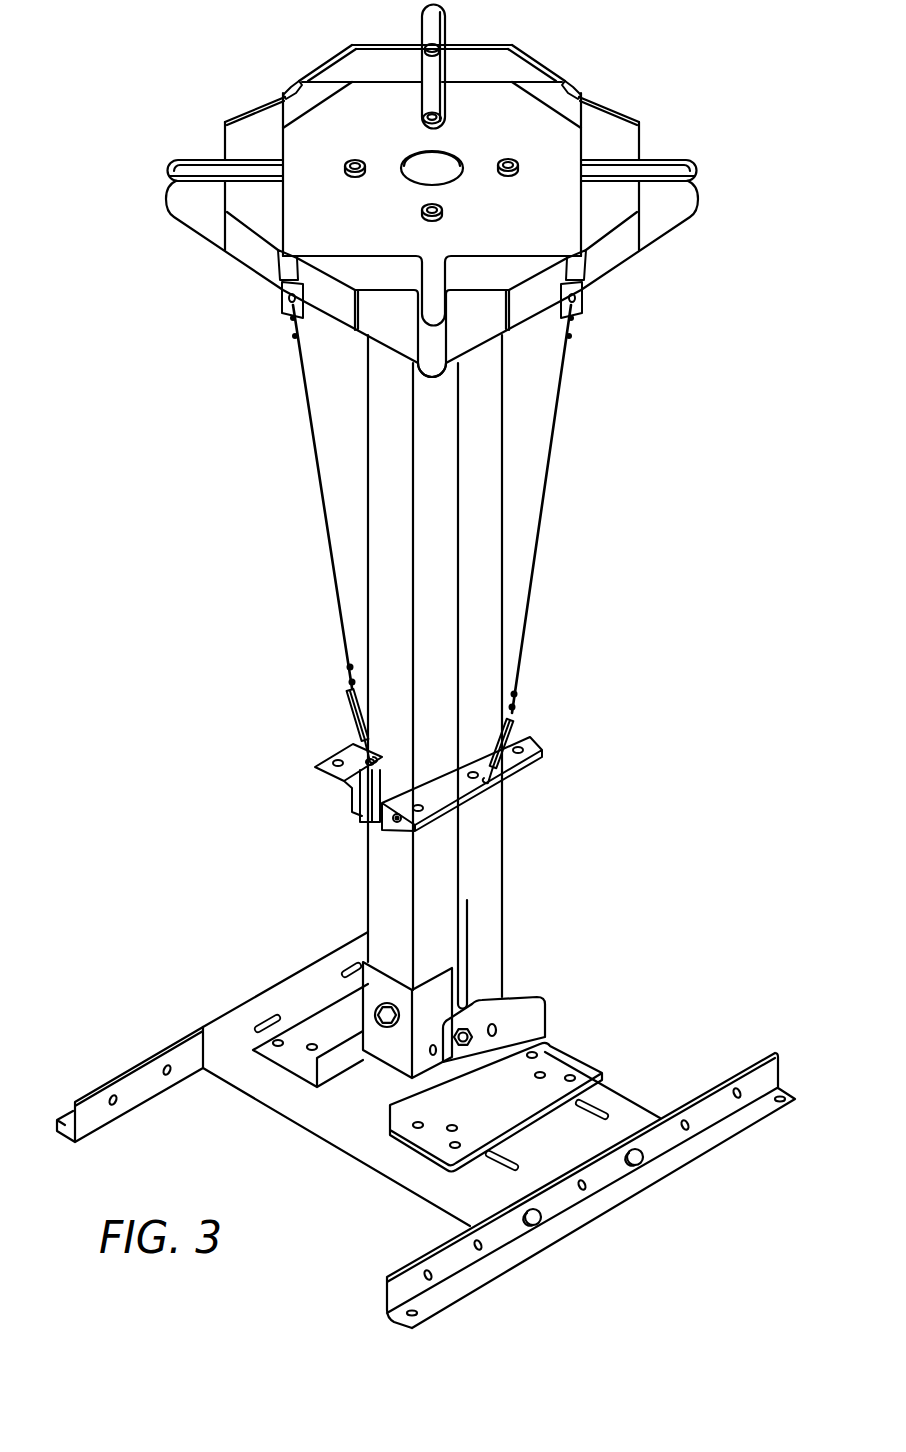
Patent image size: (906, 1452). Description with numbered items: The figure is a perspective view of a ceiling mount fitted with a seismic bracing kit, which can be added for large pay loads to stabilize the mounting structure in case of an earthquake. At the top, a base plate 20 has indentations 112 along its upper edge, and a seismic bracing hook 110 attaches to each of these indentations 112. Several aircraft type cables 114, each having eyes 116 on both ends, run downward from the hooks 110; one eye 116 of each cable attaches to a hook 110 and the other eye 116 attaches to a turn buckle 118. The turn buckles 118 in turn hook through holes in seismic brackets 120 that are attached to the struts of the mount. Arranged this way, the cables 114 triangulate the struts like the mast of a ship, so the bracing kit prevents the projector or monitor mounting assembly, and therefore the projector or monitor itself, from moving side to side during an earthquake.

The base plate 20 is at (632, 114).
The seismic bracing hook 110 is at (449, 532).
The indentations 112 is at (288, 93).
The aircraft type cables 114 is at (320, 486).
The eyes 116 is at (292, 322).
The turn buckles 118 is at (512, 719).
The seismic brackets 120 is at (318, 765).